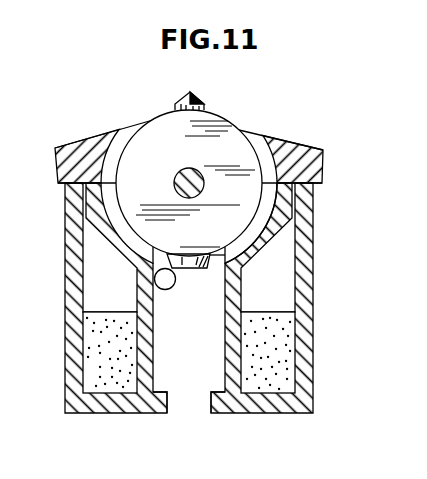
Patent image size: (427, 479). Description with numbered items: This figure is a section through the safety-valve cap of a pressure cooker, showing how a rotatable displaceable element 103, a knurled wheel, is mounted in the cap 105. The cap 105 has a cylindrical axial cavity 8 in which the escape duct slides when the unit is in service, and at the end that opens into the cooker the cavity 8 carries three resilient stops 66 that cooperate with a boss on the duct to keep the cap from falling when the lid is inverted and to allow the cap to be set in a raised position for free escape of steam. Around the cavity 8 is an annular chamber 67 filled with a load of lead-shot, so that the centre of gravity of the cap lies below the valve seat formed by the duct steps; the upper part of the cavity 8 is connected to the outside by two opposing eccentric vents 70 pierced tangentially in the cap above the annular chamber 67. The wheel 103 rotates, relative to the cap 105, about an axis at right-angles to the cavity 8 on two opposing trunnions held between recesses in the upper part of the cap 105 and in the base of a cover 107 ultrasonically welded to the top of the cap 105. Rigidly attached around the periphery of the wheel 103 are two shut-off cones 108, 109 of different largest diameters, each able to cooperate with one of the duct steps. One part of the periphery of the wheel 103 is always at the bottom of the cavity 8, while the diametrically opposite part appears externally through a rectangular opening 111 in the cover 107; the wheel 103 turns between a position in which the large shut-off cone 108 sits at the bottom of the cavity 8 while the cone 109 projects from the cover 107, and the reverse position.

The cylindrical axial cavity 8 is at (183, 370).
The resilient stops 66 is at (160, 402).
The annular chamber 67 is at (101, 380).
The eccentric vents 70 is at (166, 278).
The displaceable element 103 is at (212, 162).
The cap 105 is at (60, 354).
The cover 107 is at (297, 160).
The large shut-off cone 108 is at (244, 267).
The shut-off cone 109 is at (197, 101).
The rectangular opening 111 is at (113, 146).